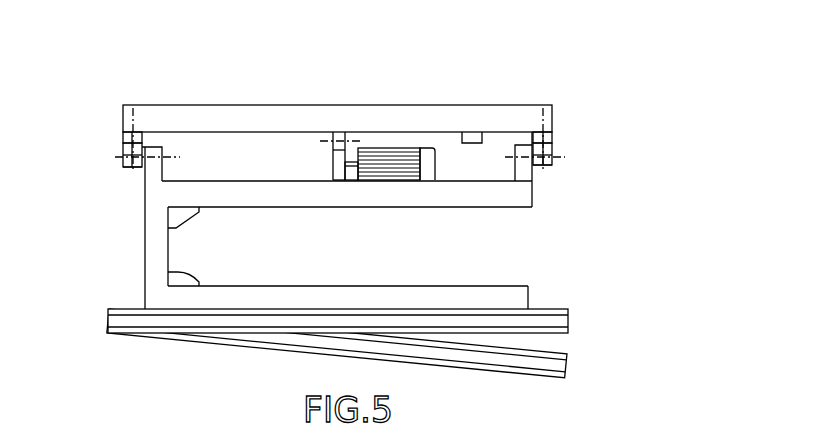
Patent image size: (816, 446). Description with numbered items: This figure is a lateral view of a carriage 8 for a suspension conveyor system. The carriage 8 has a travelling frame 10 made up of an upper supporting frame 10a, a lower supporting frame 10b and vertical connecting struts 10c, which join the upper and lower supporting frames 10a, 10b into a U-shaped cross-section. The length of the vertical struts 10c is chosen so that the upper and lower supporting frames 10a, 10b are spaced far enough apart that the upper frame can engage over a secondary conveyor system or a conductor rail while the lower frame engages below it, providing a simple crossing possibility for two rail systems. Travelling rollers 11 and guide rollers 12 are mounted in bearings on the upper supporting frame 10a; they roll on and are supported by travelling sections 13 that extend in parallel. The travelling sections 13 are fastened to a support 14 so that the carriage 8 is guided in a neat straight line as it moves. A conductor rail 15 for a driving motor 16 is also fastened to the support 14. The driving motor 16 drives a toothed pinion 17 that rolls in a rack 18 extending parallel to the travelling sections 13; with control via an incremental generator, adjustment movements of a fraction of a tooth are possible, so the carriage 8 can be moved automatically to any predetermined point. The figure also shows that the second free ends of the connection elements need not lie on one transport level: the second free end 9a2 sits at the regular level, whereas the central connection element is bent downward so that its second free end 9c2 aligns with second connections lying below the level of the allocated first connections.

The carriage 8 is at (145, 340).
The second free end of connection element 9a2 is at (557, 323).
The second free end of central connection element 9c2 is at (553, 363).
The travelling frame 10 is at (157, 236).
The upper supporting frame 10a is at (510, 190).
The lower supporting frame 10b is at (518, 295).
The vertical connecting struts 10c is at (160, 252).
The travelling rollers 11 is at (122, 165).
The guide rollers 12 is at (122, 138).
The travelling sections 13 is at (120, 155).
The support 14 is at (160, 112).
The conductor rail 15 is at (472, 133).
The driving motor 16 is at (398, 148).
The toothed pinion 17 is at (337, 167).
The rack 18 is at (341, 132).